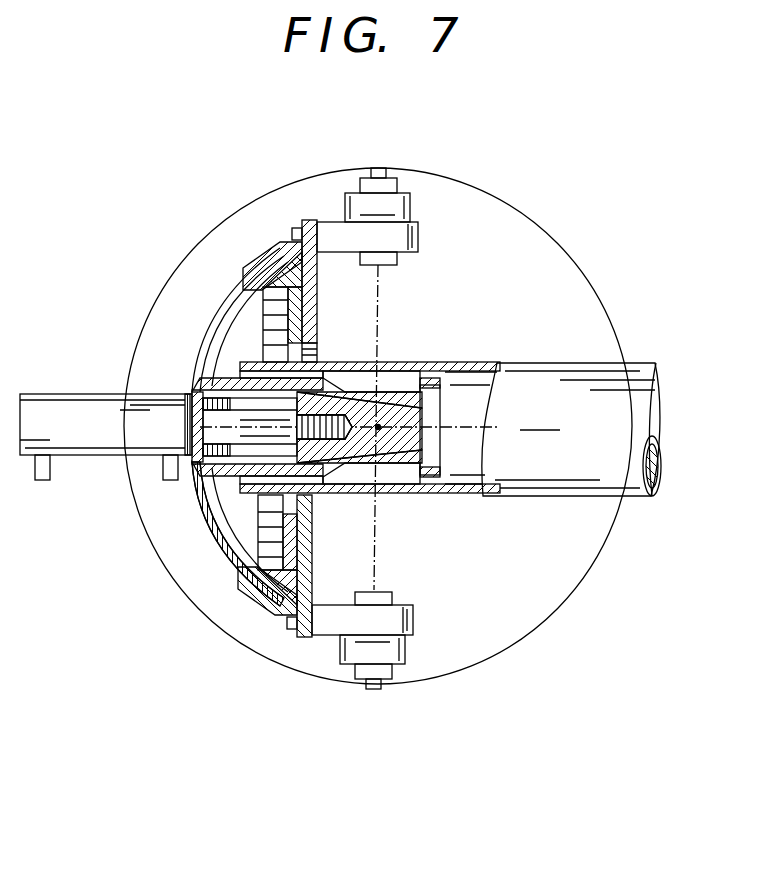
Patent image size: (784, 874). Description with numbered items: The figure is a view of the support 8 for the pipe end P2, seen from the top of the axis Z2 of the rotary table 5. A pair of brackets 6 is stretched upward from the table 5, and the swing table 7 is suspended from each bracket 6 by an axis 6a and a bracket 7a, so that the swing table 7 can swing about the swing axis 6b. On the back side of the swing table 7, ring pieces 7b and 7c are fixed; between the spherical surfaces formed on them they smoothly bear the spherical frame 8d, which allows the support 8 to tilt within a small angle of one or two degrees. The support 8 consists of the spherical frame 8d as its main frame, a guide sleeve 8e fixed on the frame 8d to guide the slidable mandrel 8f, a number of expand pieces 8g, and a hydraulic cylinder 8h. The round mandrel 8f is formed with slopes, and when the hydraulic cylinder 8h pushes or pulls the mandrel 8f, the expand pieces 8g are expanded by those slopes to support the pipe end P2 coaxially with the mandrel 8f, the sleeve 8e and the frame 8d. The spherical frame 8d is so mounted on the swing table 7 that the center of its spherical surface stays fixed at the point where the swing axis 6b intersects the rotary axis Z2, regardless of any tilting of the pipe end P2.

The rotary table 5 is at (570, 576).
The pipe end P2 is at (585, 372).
The support 8 is at (94, 280).
The hydraulic cylinder 8h is at (82, 405).
The spherical frame 8d is at (213, 531).
The guide sleeve 8e is at (240, 482).
The expand pieces 8g is at (370, 390).
The mandrel 8f is at (440, 455).
The rotary axis Z2 is at (420, 373).
The swing table 7 is at (300, 642).
The bracket 7a is at (410, 243).
The ring piece 7b is at (260, 600).
The ring piece 7c is at (252, 588).
The bracket 6 is at (410, 204).
The axis 6a is at (380, 166).
The swing axis 6b is at (377, 570).